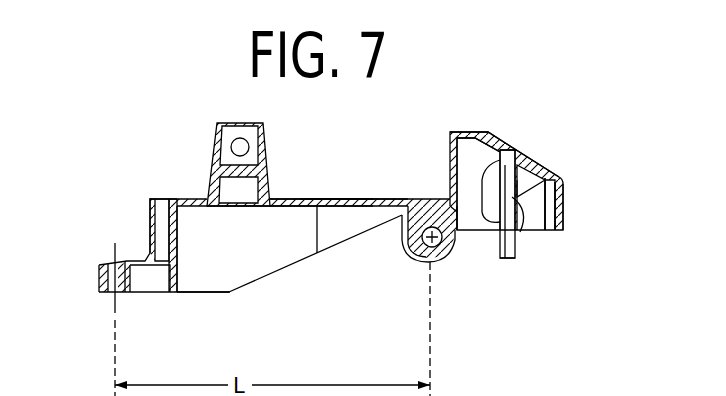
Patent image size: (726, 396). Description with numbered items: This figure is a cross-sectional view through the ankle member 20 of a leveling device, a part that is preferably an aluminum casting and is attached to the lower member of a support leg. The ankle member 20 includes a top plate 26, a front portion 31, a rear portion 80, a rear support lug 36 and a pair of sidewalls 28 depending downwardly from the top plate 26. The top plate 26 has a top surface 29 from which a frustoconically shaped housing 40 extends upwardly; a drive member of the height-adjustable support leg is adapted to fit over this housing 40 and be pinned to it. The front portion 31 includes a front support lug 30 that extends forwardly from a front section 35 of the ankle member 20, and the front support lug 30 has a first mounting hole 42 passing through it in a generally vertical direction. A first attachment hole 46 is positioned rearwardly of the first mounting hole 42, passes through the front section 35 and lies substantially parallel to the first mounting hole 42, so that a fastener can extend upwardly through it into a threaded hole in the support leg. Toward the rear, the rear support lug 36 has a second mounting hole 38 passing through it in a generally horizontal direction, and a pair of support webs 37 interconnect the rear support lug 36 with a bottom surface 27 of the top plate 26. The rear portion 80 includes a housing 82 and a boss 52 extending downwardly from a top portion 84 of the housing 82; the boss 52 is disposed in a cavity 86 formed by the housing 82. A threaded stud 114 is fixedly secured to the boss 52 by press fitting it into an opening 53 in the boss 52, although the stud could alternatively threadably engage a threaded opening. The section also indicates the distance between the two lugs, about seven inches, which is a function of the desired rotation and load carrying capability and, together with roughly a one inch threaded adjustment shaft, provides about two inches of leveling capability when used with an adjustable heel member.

The ankle member 20 is at (184, 302).
The top plate 26 is at (288, 200).
The bottom surface 27 is at (275, 207).
The sidewalls 28 is at (228, 255).
The top surface 29 is at (322, 200).
The front support lug 30 is at (99, 281).
The front portion 31 is at (145, 222).
The front section 35 is at (180, 232).
The rear support lug 36 is at (450, 235).
The support webs 37 is at (403, 215).
The second mounting hole 38 is at (428, 250).
The housing 40 is at (213, 138).
The first mounting hole 42 is at (115, 305).
The first attachment hole 46 is at (162, 208).
The boss 52 is at (483, 195).
The opening 53 is at (509, 243).
The rear portion 80 is at (549, 154).
The housing 82 is at (555, 171).
The top portion 84 is at (472, 135).
The cavity 86 is at (528, 207).
The threaded stud 114 is at (512, 248).